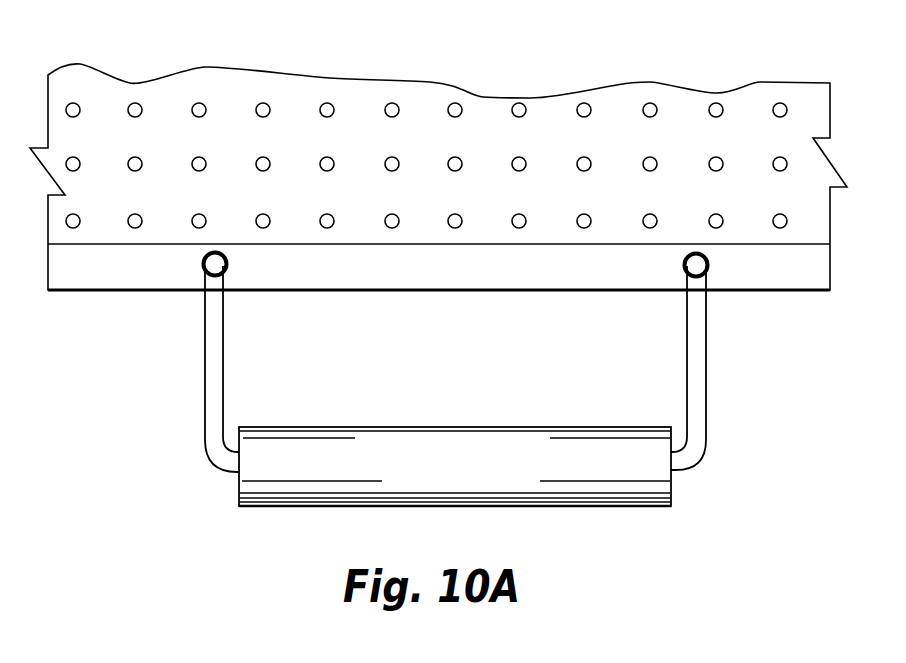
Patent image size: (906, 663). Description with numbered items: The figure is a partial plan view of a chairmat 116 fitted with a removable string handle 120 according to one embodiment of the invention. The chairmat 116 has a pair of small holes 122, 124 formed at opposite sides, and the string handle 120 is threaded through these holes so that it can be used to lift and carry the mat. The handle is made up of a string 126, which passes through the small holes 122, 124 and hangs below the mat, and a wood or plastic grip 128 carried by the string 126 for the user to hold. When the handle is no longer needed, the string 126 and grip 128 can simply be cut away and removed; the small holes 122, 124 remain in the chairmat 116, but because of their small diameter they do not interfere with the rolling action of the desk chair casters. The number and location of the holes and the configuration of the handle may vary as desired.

The chairmat 116 is at (462, 137).
The removable string handle 120 is at (442, 406).
The small hole 122 is at (227, 259).
The small hole 124 is at (708, 259).
The string 126 is at (212, 343).
The grip 128 is at (451, 438).